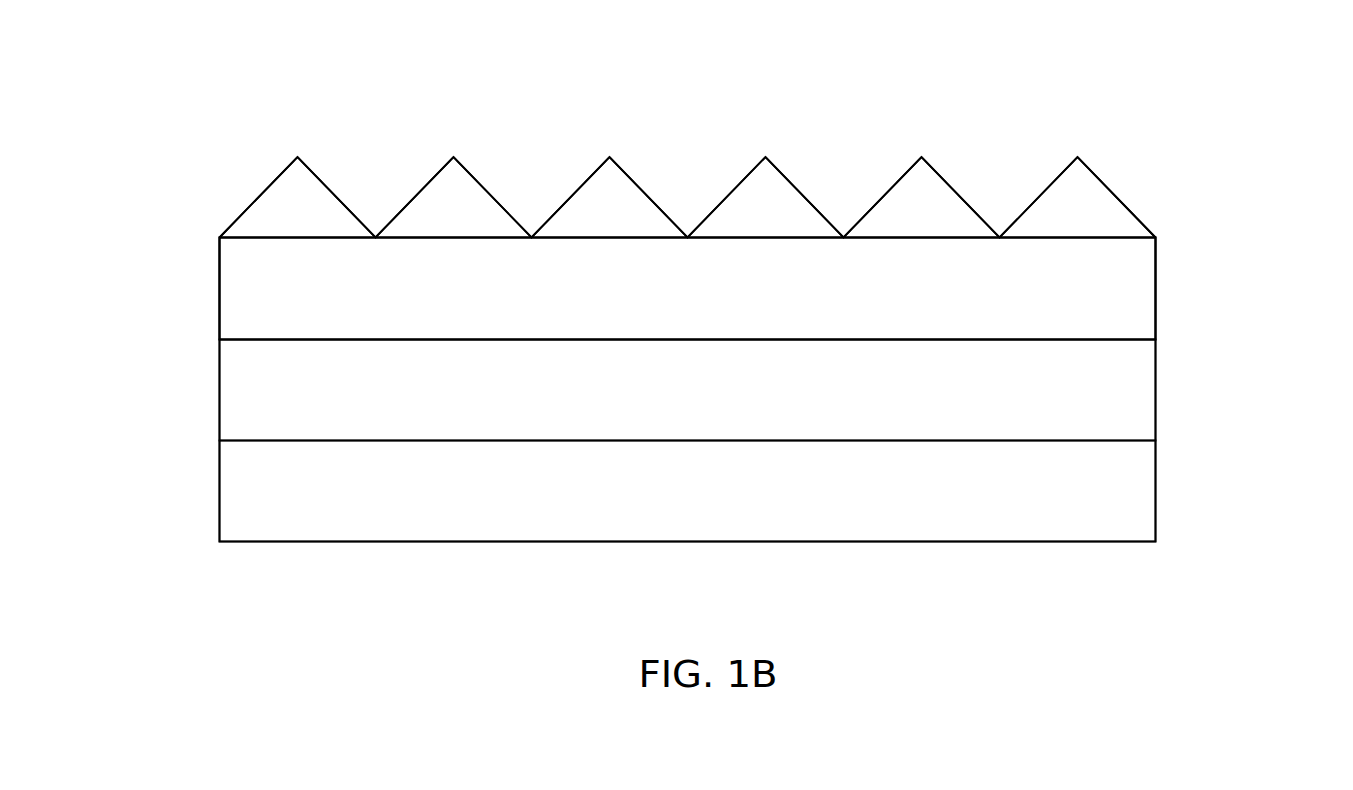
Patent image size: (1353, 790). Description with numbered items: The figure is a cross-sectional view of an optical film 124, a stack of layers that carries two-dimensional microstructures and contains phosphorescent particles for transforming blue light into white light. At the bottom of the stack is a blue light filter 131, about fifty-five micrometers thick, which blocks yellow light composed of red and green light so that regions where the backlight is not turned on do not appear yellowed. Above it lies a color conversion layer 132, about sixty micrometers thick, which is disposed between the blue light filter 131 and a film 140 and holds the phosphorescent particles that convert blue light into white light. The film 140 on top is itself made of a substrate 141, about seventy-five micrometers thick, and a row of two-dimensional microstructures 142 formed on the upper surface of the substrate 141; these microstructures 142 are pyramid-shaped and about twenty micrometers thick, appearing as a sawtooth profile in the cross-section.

The optical film 124 is at (188, 82).
The blue light filter 131 is at (1130, 493).
The color conversion layer 132 is at (1130, 388).
The film 140 is at (1260, 172).
The substrate 141 is at (1130, 289).
The two-dimensional microstructures 142 is at (1136, 190).